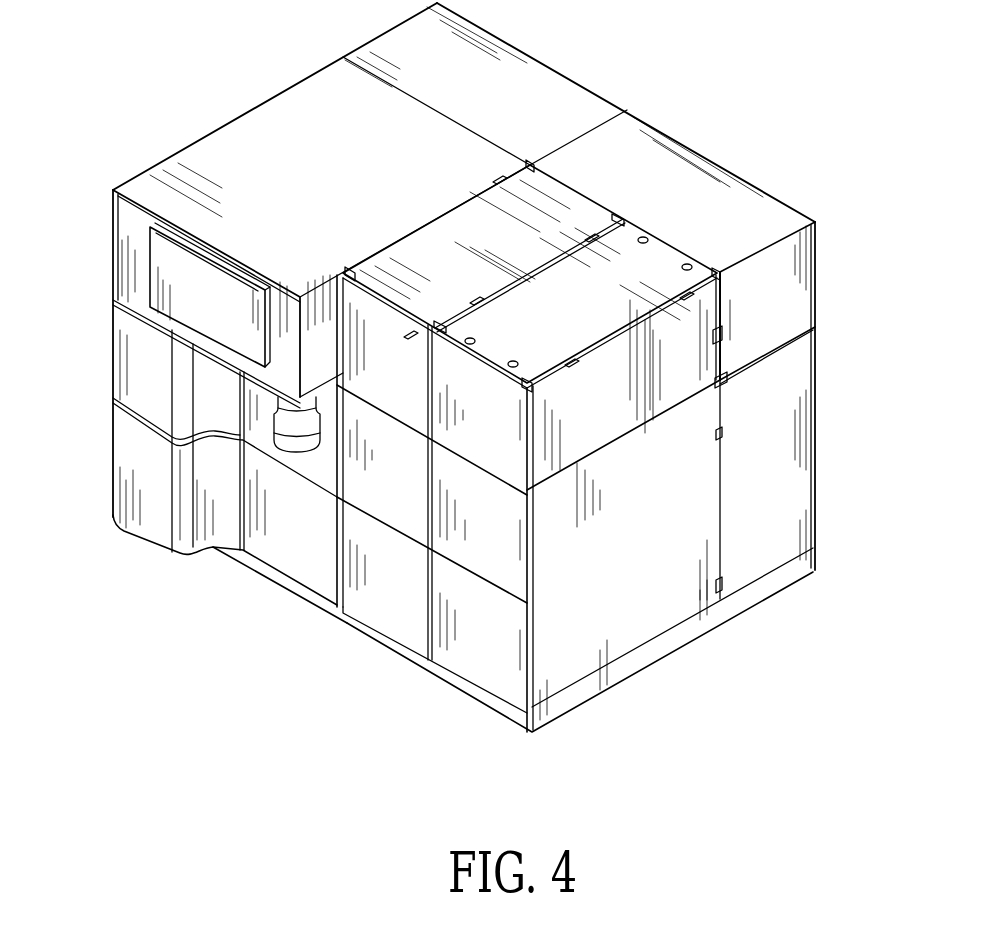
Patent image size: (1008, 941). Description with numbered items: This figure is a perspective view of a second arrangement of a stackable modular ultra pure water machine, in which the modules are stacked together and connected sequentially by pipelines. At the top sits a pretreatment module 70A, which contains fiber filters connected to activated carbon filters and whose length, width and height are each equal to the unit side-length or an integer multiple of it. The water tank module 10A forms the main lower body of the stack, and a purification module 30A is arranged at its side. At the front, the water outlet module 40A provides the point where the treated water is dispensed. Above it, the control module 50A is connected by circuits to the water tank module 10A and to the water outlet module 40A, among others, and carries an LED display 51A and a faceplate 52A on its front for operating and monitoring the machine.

The water tank module 10A is at (630, 635).
The purification module 30A is at (798, 452).
The water outlet module 40A is at (283, 430).
The control module 50A is at (292, 120).
The LED display 51A is at (177, 272).
The faceplate 52A is at (306, 572).
The pretreatment module 70A is at (693, 312).